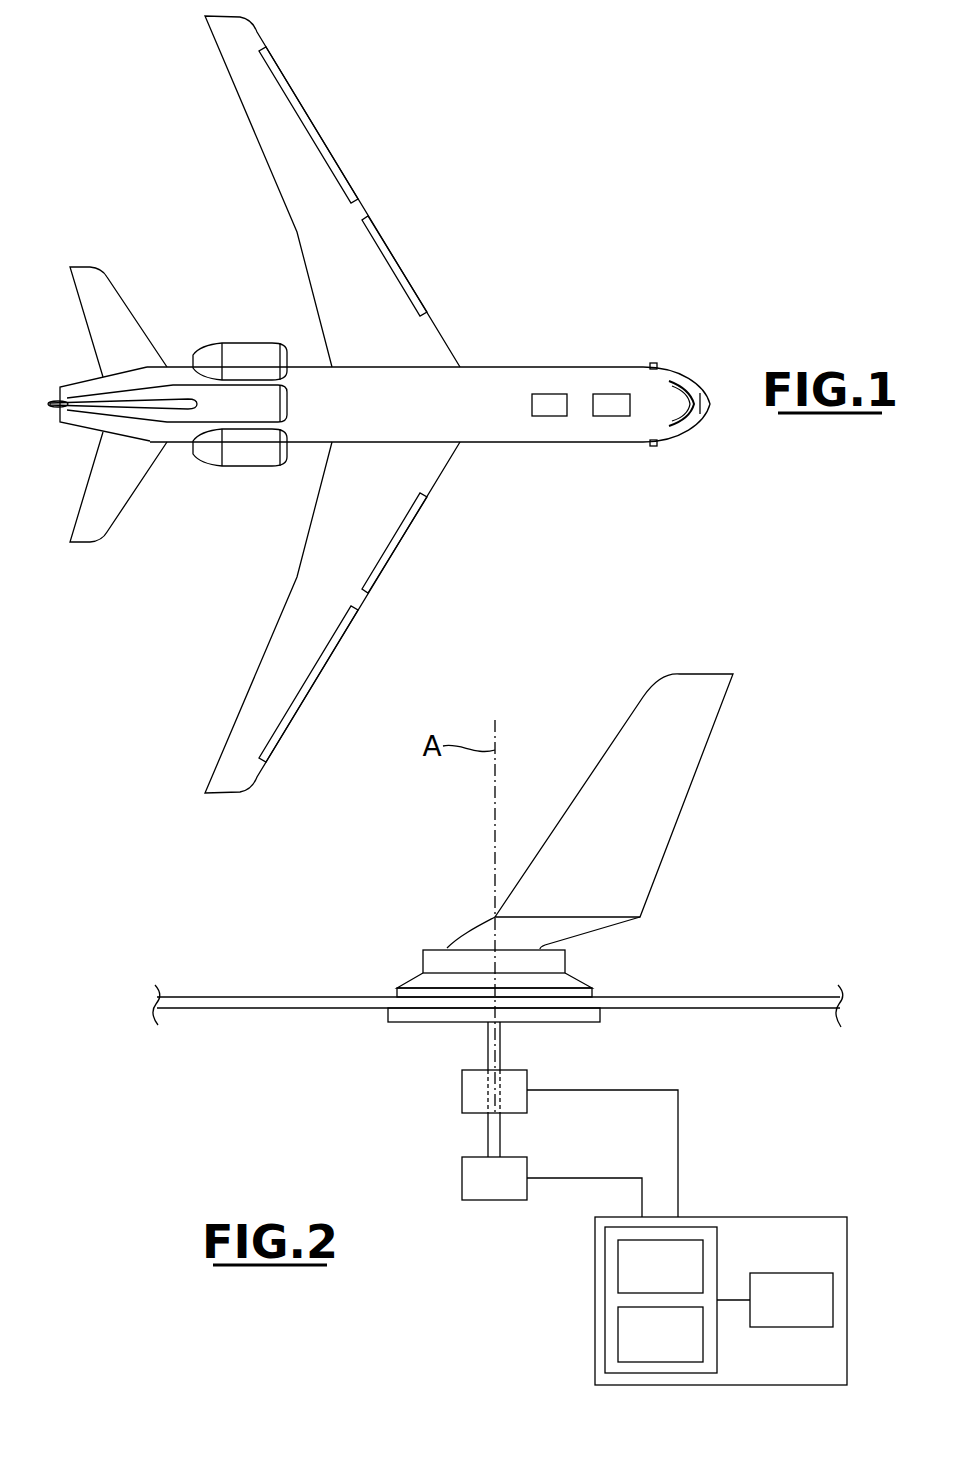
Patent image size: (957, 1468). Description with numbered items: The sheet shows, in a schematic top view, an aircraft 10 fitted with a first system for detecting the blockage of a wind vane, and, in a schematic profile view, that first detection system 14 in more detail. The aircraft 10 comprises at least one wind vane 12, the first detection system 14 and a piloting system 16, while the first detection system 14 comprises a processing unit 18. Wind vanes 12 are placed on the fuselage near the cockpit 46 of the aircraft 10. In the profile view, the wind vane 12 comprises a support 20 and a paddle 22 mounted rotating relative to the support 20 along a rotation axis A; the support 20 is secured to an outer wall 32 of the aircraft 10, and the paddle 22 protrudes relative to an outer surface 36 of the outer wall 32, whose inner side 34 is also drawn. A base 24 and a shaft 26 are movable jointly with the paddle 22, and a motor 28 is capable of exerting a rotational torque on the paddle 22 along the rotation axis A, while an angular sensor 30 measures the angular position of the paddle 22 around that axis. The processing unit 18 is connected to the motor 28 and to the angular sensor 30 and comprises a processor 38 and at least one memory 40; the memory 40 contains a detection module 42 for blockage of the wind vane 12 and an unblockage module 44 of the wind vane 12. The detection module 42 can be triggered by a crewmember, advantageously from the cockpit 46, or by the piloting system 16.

In FIG. 1, the aircraft 10 is at (562, 237).
In FIG. 1, the wind vane 12 is at (660, 362).
In FIG. 2, the wind vane 12 is at (573, 811).
In FIG. 2, the first detection system 14 is at (619, 927).
In FIG. 1, the piloting system 16 is at (545, 398).
In FIG. 1, the processing unit 18 is at (608, 396).
In FIG. 2, the processing unit 18 is at (721, 1260).
In FIG. 2, the support 20 is at (415, 1030).
In FIG. 2, the paddle 22 is at (693, 783).
In FIG. 2, the base 24 is at (580, 968).
In FIG. 2, the shaft 26 is at (502, 1046).
In FIG. 2, the motor 28 is at (494, 1178).
In FIG. 2, the angular sensor 30 is at (518, 1113).
In FIG. 1, the outer wall 32 is at (620, 447).
In FIG. 2, the outer wall 32 is at (498, 987).
In FIG. 2, the inner skin surface 34 is at (746, 1010).
In FIG. 2, the outer surface 36 is at (734, 997).
In FIG. 2, the processor 38 is at (775, 1300).
In FIG. 2, the memory 40 is at (677, 1269).
In FIG. 2, the detection module 42 is at (660, 1266).
In FIG. 2, the unblockage module 44 is at (660, 1334).
In FIG. 1, the cockpit 46 is at (700, 382).